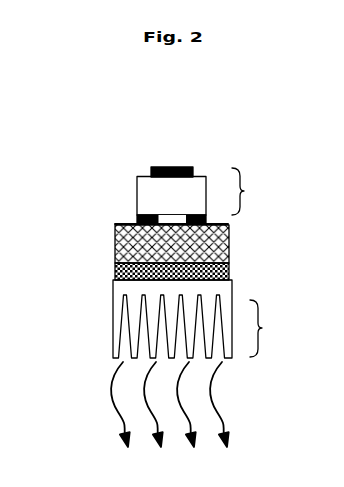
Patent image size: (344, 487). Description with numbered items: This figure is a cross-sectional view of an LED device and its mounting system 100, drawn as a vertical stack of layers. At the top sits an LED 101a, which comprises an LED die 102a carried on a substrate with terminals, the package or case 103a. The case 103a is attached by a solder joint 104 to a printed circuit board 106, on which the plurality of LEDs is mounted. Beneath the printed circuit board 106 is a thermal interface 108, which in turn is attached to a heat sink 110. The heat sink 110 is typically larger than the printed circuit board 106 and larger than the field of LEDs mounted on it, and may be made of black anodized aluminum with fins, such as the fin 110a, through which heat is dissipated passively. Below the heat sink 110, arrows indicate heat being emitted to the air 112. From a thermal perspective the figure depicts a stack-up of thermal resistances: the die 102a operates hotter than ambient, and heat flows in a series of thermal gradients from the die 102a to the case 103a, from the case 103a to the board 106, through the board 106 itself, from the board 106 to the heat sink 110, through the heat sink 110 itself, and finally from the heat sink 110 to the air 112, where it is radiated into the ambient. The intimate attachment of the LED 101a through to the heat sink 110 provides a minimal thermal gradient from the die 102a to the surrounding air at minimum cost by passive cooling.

The LED device and its mounting system 100 is at (181, 125).
The LED 101a is at (260, 191).
The LED die 102a is at (175, 167).
The substrate with terminals (package or case) 103a is at (137, 187).
The solder joint 104 is at (136, 220).
The printed circuit board 106 is at (120, 247).
The thermal interface 108 is at (120, 270).
The heat sink 110 is at (113, 290).
The fin 110a is at (276, 328).
The air 112 is at (120, 405).